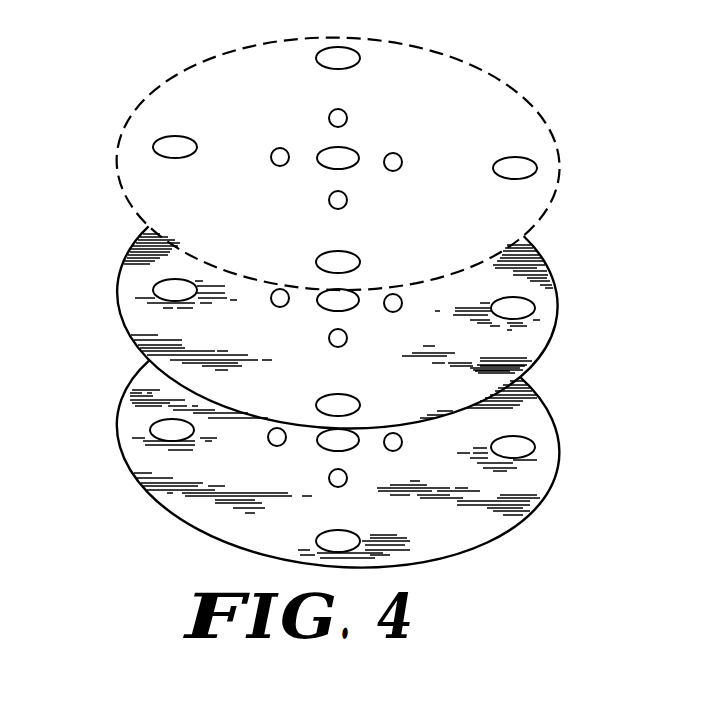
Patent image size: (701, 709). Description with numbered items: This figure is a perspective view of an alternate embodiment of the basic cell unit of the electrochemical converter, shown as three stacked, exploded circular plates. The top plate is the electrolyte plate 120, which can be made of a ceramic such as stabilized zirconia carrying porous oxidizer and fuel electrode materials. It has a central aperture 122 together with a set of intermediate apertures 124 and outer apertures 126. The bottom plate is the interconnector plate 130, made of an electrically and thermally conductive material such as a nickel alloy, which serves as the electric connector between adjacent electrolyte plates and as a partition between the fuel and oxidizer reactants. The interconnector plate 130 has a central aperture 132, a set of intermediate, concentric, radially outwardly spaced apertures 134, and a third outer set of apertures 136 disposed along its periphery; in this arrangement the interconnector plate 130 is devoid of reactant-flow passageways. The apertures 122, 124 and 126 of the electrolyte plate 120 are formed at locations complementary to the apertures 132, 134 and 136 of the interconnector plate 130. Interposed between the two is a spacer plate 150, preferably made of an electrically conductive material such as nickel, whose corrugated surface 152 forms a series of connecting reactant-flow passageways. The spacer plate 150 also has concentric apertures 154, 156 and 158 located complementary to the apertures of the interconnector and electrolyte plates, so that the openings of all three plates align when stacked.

The electrolyte plate 120 is at (507, 81).
The central aperture 122 is at (340, 155).
The intermediate apertures 124 is at (394, 160).
The outer apertures 126 is at (338, 56).
The interconnector plate 130 is at (551, 421).
The central aperture 132 is at (346, 446).
The intermediate apertures 134 is at (270, 442).
The outer apertures 136 is at (330, 540).
The spacer plate 150 is at (557, 307).
The corrugated surface 152 is at (527, 353).
The concentric aperture 154 is at (321, 300).
The concentric aperture 156 is at (347, 339).
The concentric aperture 158 is at (163, 288).